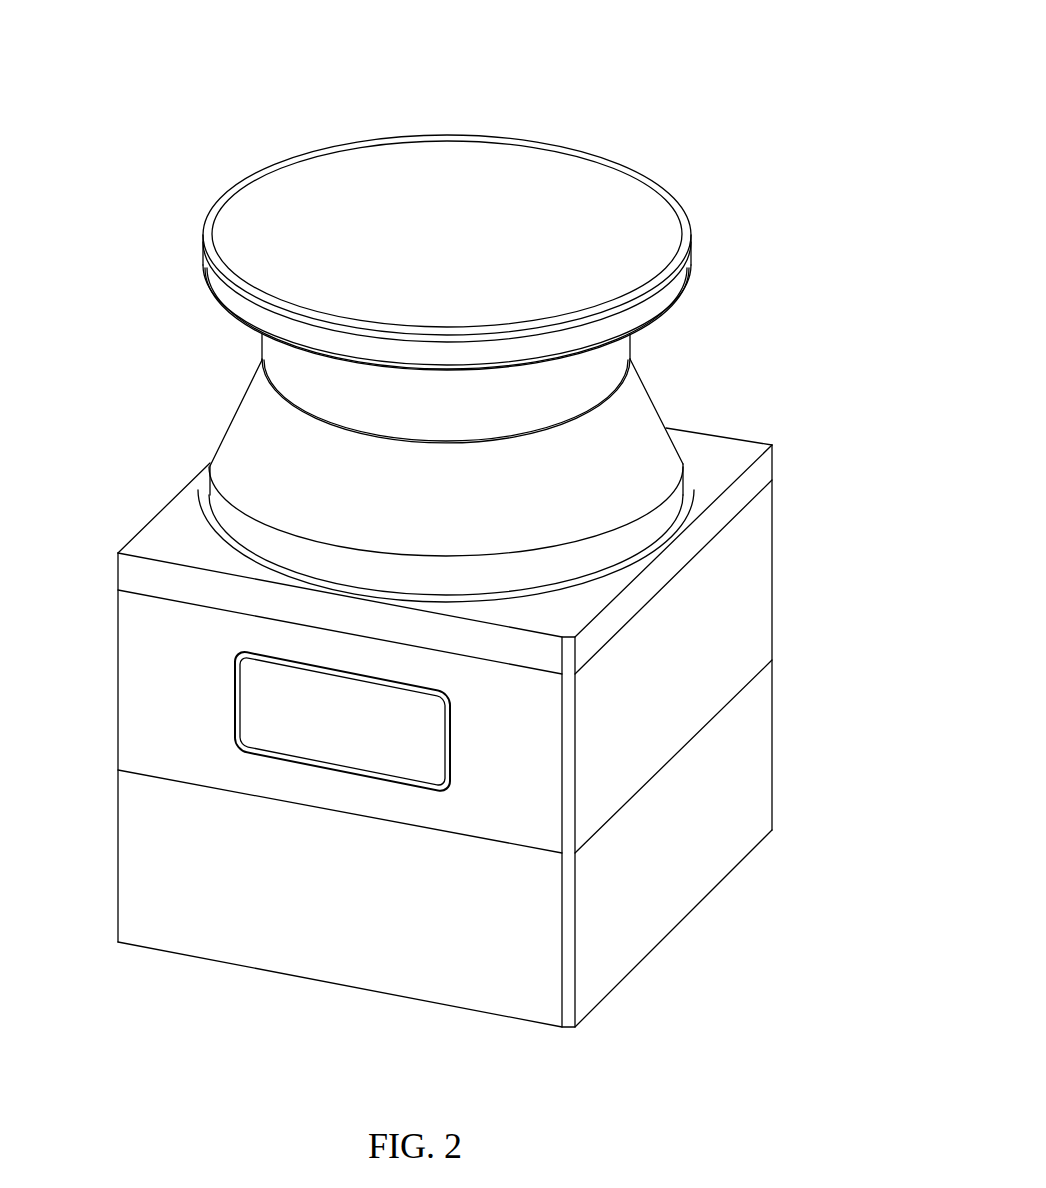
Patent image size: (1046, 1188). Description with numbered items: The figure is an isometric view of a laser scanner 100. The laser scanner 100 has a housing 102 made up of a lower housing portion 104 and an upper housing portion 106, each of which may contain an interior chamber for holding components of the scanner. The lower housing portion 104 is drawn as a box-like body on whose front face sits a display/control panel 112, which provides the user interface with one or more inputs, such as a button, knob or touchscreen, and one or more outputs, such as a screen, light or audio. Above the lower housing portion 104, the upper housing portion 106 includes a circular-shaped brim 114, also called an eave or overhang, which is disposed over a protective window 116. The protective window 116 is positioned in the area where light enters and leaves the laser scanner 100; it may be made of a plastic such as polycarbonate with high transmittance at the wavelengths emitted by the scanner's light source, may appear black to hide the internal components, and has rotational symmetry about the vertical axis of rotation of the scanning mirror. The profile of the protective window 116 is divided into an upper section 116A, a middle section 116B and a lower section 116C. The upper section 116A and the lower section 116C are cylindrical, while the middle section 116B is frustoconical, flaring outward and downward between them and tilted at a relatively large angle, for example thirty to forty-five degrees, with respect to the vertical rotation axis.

The laser scanner 100 is at (466, 519).
The housing 102 is at (466, 727).
The lower housing portion 104 is at (507, 802).
The upper housing portion 106 is at (462, 358).
The display/control panel 112 is at (263, 705).
The circular-shaped brim 114 is at (247, 177).
The protective window 116 is at (519, 429).
The upper section 116A is at (612, 352).
The middle section 116B is at (640, 402).
The lower section 116C is at (670, 507).